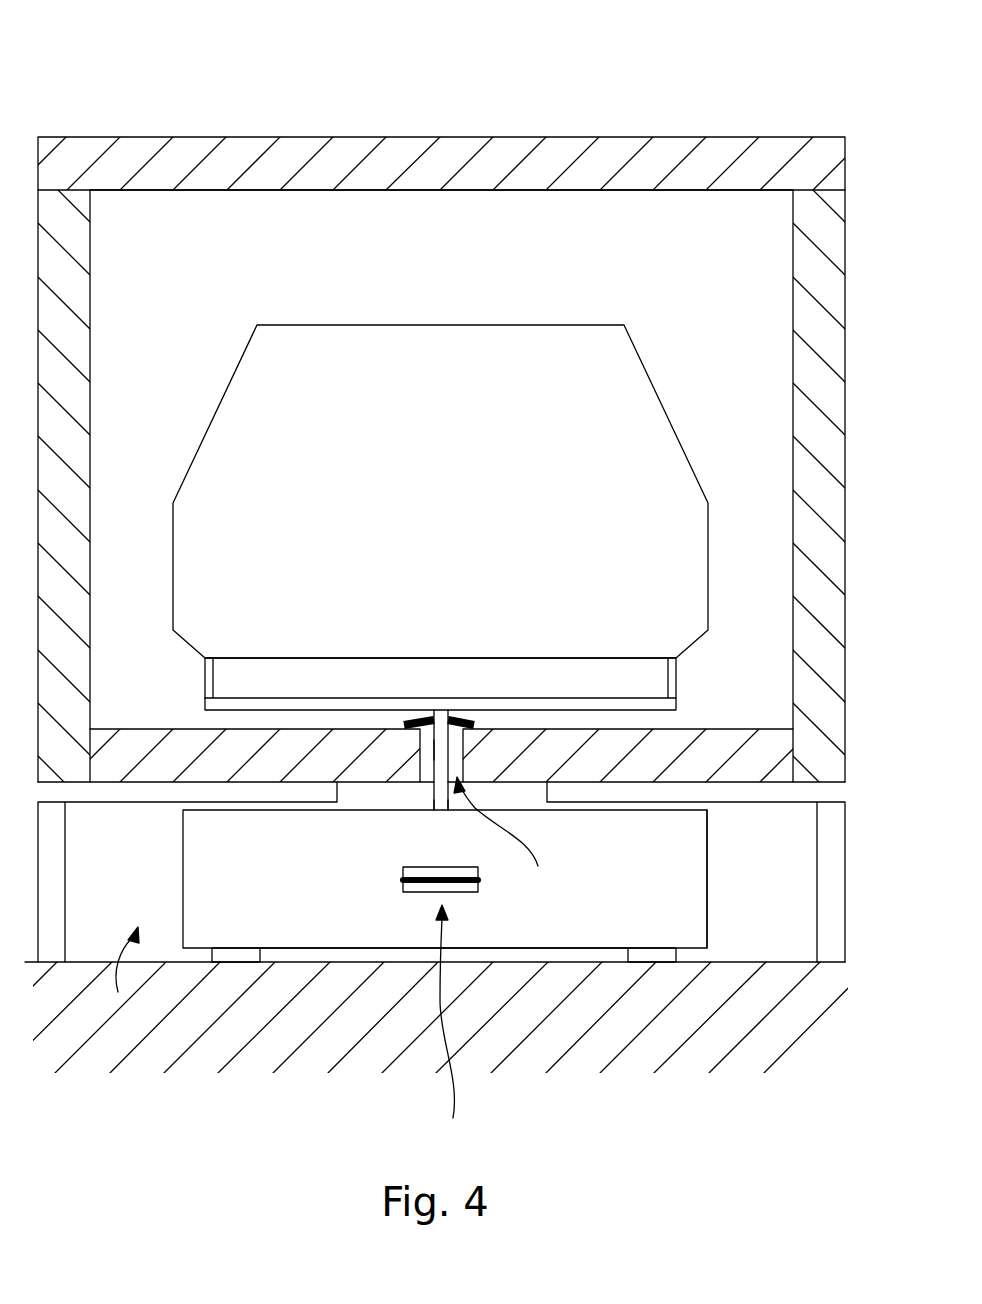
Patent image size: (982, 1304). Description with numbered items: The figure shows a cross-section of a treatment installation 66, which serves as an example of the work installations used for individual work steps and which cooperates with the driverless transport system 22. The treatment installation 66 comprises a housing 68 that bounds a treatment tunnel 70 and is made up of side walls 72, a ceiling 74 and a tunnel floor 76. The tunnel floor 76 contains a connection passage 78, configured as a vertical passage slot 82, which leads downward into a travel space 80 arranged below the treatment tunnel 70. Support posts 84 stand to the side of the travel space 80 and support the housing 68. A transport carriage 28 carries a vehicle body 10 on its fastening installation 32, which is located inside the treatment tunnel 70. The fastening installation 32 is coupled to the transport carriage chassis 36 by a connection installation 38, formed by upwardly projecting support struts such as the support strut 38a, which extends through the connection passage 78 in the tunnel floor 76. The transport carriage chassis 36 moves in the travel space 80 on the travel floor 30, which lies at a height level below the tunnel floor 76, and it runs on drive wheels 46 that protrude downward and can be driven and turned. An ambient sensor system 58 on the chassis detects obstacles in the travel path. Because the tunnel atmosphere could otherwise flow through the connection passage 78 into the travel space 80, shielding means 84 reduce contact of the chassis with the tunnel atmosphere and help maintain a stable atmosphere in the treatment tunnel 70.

The treatment installation 66 is at (150, 72).
The housing 68 is at (276, 125).
The treatment tunnel 70 is at (383, 220).
The side walls 72 is at (82, 344).
The ceiling 74 is at (502, 157).
The tunnel floor 76 is at (745, 755).
The vehicle body 10 is at (547, 355).
The fastening installation 32 is at (603, 685).
The connection installation 38 is at (465, 762).
The support strut 38a is at (438, 751).
The shielding means 84 is at (474, 706).
The connection passage 78 is at (505, 833).
The vertical passage slot 82 is at (422, 775).
The transport carriage 28 is at (682, 917).
The transport carriage chassis 36 is at (707, 863).
The ambient sensor system 58 is at (440, 1006).
The drive wheels 46 is at (228, 955).
The travel floor 30 is at (405, 958).
The travel space 80 is at (123, 1036).
The transport system 22 is at (558, 978).